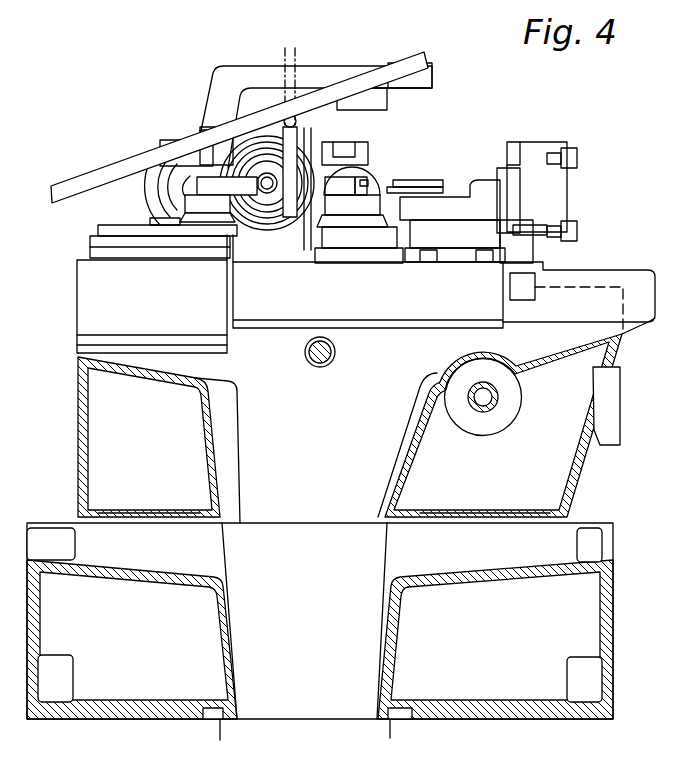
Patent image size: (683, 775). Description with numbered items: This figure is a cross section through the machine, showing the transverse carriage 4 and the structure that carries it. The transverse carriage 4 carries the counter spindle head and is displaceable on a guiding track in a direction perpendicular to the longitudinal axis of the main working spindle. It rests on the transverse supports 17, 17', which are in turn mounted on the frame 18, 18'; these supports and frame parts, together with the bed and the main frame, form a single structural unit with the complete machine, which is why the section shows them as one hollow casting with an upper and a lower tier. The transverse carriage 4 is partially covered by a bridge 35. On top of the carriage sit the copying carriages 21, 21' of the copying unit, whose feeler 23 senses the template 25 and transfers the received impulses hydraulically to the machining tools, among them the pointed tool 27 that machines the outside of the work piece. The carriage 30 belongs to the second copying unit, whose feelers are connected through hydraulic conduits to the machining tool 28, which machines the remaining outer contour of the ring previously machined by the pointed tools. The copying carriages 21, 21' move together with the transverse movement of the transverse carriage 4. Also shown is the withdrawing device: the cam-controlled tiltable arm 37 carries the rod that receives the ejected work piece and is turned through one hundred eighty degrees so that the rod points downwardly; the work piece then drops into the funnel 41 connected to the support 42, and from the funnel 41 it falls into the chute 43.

The transverse carriage 4 is at (247, 308).
The transverse support 17 is at (510, 417).
The transverse support 17' is at (181, 440).
The frame 18 is at (482, 633).
The frame 18' is at (156, 634).
The copying carriage 21 is at (359, 193).
The copying carriage 21' is at (466, 188).
The feeler 23 is at (560, 228).
The template 25 is at (527, 230).
The pointed tool 27 is at (405, 182).
The machining tool 28 is at (366, 182).
The carriage 30 is at (207, 200).
The bridge 35 is at (112, 237).
The tiltable arm 37 is at (290, 173).
The funnel 41 is at (418, 61).
The support 42 is at (247, 77).
The chute 43 is at (353, 90).